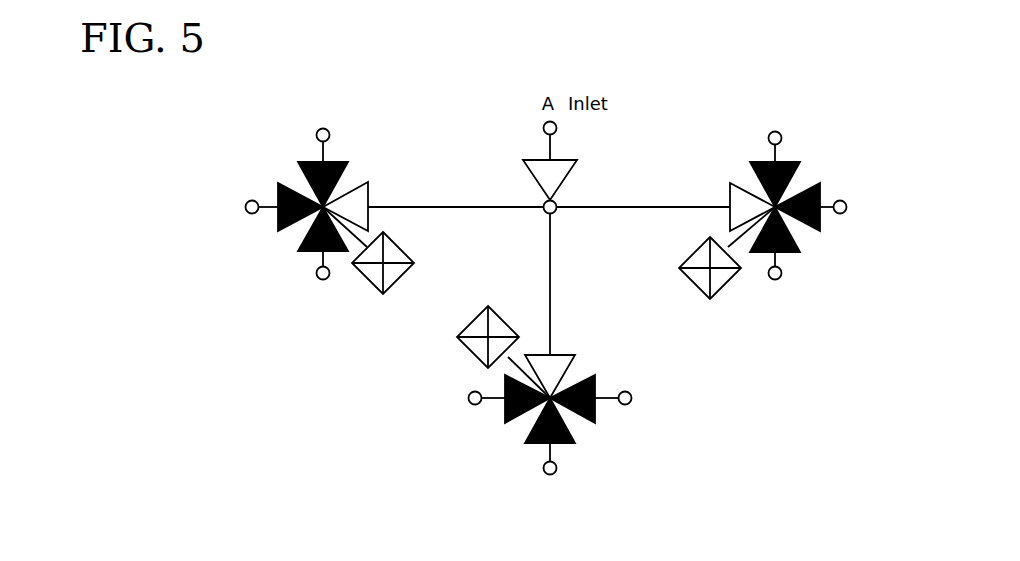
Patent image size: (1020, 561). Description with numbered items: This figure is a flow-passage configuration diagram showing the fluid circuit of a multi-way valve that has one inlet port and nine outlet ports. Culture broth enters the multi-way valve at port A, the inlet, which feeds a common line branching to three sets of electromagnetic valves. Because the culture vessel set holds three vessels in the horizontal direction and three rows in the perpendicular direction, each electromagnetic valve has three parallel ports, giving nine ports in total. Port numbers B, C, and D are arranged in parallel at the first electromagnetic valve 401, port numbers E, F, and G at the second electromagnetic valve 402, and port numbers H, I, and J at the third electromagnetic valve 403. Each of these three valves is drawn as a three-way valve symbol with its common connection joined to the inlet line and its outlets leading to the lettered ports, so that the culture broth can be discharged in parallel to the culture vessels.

The electromagnetic valve SV1 401 is at (708, 298).
The electromagnetic valve SV2 402 is at (460, 343).
The electromagnetic valve SV3 403 is at (373, 289).